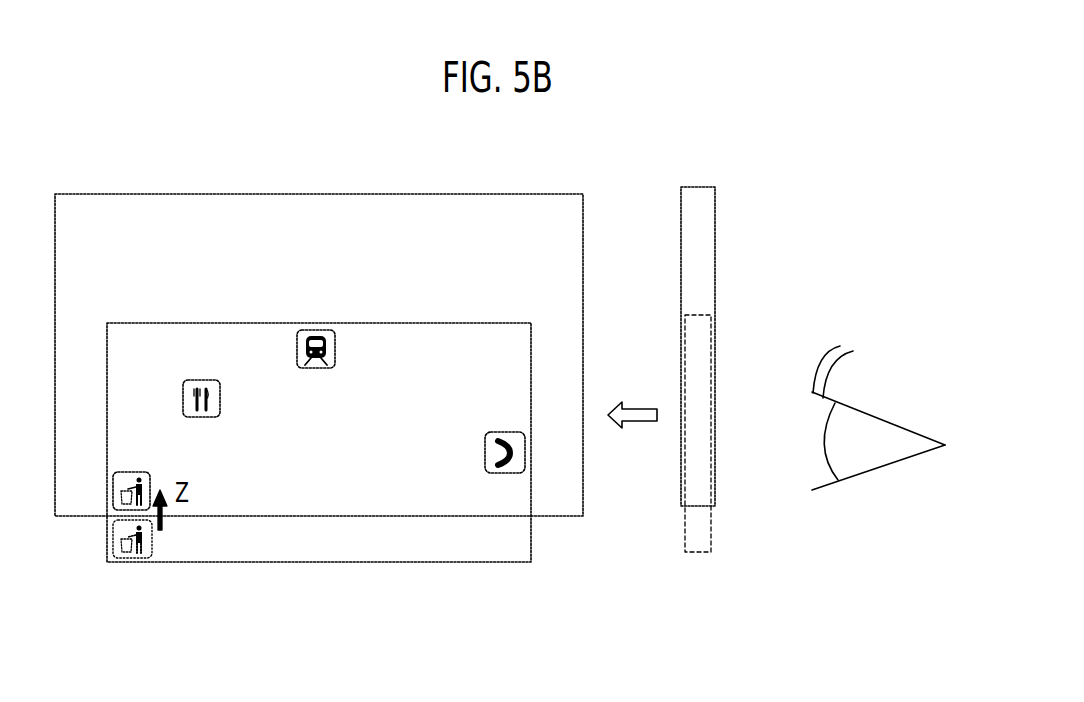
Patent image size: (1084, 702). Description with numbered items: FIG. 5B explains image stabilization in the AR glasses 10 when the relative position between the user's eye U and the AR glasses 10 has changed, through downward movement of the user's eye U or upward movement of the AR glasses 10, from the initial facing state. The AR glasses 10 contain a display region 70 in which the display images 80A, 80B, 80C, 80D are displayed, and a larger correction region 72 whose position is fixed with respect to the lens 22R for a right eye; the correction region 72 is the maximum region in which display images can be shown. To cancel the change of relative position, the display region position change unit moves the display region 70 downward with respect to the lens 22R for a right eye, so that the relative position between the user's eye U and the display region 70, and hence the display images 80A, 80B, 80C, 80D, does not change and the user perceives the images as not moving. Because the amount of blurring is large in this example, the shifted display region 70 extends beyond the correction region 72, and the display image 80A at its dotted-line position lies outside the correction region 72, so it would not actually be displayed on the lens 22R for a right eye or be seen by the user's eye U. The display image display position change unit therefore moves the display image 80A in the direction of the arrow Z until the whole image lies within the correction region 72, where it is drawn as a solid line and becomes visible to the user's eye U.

The correction region 72 is at (533, 217).
The display region 70 is at (413, 530).
The AR glasses 10 is at (733, 307).
The lens for a right eye 22R is at (700, 187).
The display image 80A is at (113, 492).
The display image 80B is at (525, 455).
The display image 80C is at (313, 330).
The display image 80D is at (202, 380).
The user's eye U is at (897, 375).